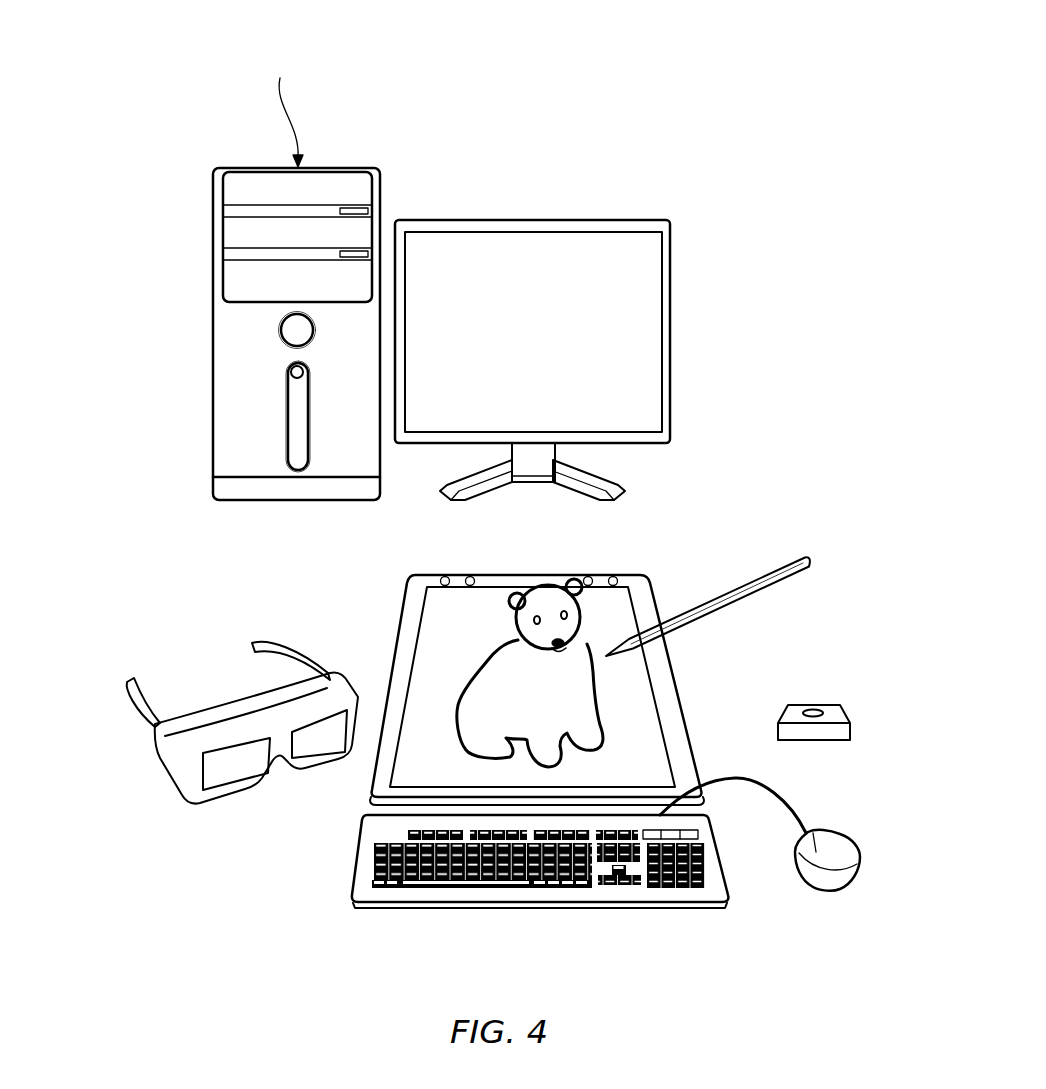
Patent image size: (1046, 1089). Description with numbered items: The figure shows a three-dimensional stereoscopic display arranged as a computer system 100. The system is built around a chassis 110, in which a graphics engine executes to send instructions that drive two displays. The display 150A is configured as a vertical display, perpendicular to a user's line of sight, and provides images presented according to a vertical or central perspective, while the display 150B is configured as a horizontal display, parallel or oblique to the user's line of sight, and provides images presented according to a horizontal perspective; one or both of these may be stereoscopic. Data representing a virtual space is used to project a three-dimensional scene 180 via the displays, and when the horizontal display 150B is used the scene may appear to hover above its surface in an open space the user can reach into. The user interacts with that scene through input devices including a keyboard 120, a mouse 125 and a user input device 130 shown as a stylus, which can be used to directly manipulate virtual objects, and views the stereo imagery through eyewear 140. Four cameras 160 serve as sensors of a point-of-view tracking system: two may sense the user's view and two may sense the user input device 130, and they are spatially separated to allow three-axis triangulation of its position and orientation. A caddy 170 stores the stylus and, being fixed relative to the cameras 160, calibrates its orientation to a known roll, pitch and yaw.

The computer system 100 is at (605, 130).
The chassis 110 is at (260, 168).
The keyboard 120 is at (677, 907).
The mouse 125 is at (840, 890).
The user input device 130 is at (806, 558).
The eyewear 140 is at (120, 695).
The display 150A is at (612, 220).
The display 150B is at (674, 694).
The cameras 160 is at (610, 573).
The caddy 170 is at (815, 704).
The scene 180 is at (478, 634).